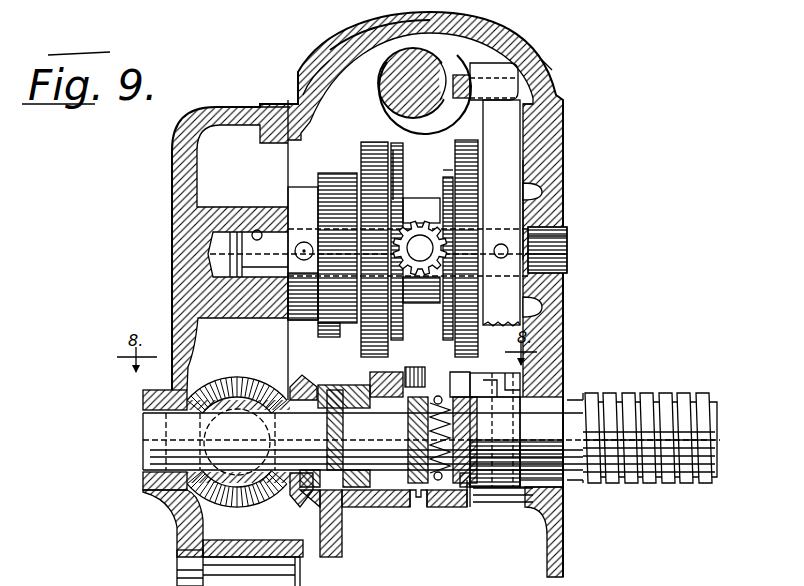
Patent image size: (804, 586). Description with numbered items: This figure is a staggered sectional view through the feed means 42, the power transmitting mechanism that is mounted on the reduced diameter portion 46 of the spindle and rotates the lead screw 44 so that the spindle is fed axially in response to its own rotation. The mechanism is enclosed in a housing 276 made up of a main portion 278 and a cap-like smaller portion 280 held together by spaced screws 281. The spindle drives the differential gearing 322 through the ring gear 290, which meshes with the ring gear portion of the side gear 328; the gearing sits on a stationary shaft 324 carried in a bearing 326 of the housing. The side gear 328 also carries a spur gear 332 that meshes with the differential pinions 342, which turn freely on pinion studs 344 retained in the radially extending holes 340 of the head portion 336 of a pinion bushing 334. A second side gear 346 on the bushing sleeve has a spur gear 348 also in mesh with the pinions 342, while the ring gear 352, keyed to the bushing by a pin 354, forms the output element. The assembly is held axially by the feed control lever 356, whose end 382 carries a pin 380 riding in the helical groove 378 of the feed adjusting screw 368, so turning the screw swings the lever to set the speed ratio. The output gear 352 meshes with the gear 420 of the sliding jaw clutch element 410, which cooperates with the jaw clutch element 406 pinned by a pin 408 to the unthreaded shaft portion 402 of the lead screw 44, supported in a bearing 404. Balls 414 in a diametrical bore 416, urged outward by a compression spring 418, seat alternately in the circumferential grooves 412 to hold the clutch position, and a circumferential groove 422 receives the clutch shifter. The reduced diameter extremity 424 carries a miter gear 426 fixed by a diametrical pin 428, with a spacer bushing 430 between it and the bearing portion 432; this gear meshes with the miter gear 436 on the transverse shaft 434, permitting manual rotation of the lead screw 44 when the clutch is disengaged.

The feed means 42 is at (580, 37).
The lead screw 44 is at (710, 369).
The reduced diameter portion 46 is at (492, 533).
The housing 276 is at (309, 74).
The main portion 278 is at (336, 46).
The cap-like smaller portion 280 is at (256, 106).
The screws 281 is at (185, 557).
The ring gear 290 is at (645, 583).
The differential gearing 322 is at (447, 143).
The shaft 324 is at (568, 258).
The bearing 326 is at (695, 583).
The side gear 328 is at (257, 231).
The spur gear 332 is at (479, 165).
The pinion bushing 334 is at (455, 173).
The head portion 336 is at (418, 199).
The radially extending holes 340 is at (448, 258).
The differential pinions 342 is at (428, 264).
The pinion studs 344 is at (437, 331).
The second side gear 346 is at (370, 143).
The spur gear 348 is at (397, 190).
The ring gear 352 is at (336, 175).
The pin 354 is at (302, 242).
The feed control lever 356 is at (506, 183).
The feed adjusting screw 368 is at (395, 74).
The helical groove 378 is at (549, 101).
The pin 380 is at (470, 63).
The end 382 is at (549, 63).
The unthreaded shaft portion 402 is at (623, 381).
The bearing 404 is at (622, 524).
The jaw clutch element 406 is at (490, 423).
The pin 408 is at (407, 368).
The sliding jaw clutch element 410 is at (375, 507).
The circumferential grooves 412 is at (438, 500).
The balls 414 is at (438, 396).
The diametrical bore 416 is at (447, 497).
The compression spring 418 is at (401, 440).
The gear 420 is at (383, 582).
The circumferential groove 422 is at (408, 505).
The reduced diameter extremity 424 is at (143, 413).
The miter gear 426 is at (290, 492).
The diametrical pin 428 is at (330, 405).
The spacer bushing 430 is at (170, 508).
The bearing portion 432 is at (148, 482).
The shaft 434 is at (165, 438).
The miter gear 436 is at (273, 364).